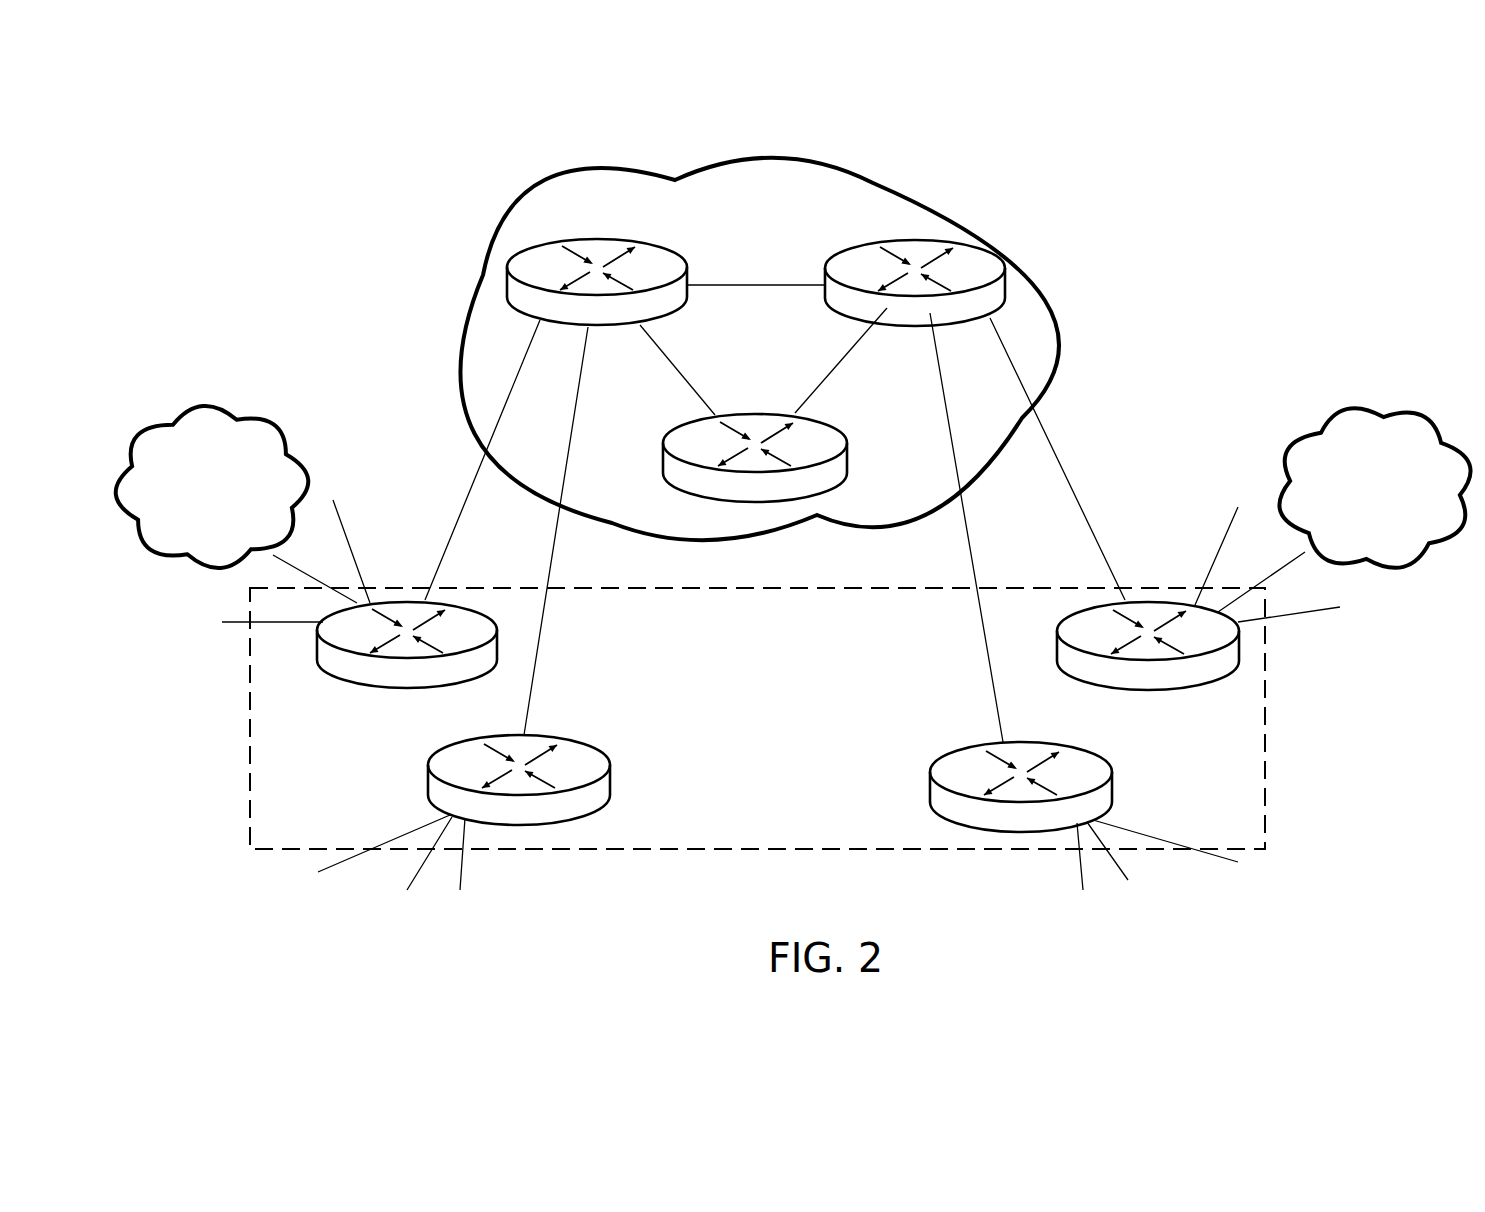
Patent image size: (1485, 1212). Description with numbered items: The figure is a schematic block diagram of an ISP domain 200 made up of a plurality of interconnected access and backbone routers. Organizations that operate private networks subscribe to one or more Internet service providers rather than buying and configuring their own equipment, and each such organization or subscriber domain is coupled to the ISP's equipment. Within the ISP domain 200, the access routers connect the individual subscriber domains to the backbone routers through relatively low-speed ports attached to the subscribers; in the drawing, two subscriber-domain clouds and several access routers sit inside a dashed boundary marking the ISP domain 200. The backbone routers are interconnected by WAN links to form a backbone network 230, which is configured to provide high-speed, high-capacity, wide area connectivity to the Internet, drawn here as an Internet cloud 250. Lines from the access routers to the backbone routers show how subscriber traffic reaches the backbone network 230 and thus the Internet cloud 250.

The ISP domain 200 is at (757, 718).
The backbone network 230 is at (760, 362).
The Internet cloud 250 is at (759, 349).